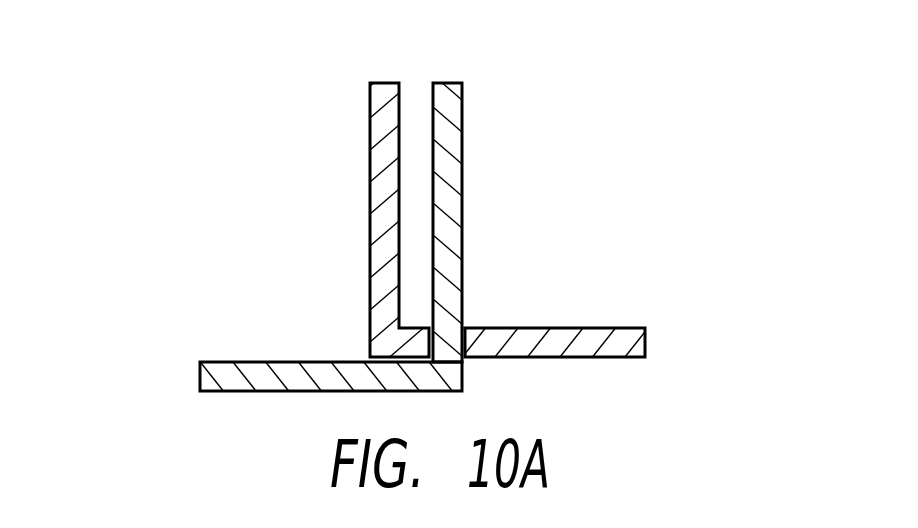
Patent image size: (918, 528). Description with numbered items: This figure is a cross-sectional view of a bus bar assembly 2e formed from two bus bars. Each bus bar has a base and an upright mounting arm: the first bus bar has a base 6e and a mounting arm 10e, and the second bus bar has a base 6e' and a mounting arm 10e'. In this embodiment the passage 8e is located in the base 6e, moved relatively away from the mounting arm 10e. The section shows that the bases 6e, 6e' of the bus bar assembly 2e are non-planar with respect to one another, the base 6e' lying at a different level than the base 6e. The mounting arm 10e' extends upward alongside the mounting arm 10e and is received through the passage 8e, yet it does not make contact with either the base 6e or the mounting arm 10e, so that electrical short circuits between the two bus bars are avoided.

The bus bar assembly 2e is at (419, 219).
The mounting arm 10e is at (333, 220).
The mounting arm 10e' is at (518, 222).
The base 6e is at (612, 345).
The base 6e' is at (270, 377).
The passage 8e is at (465, 325).